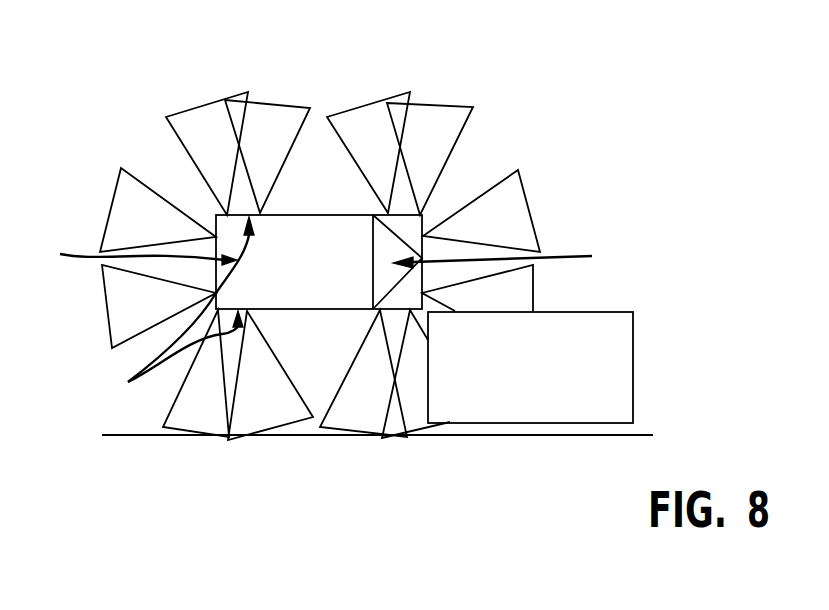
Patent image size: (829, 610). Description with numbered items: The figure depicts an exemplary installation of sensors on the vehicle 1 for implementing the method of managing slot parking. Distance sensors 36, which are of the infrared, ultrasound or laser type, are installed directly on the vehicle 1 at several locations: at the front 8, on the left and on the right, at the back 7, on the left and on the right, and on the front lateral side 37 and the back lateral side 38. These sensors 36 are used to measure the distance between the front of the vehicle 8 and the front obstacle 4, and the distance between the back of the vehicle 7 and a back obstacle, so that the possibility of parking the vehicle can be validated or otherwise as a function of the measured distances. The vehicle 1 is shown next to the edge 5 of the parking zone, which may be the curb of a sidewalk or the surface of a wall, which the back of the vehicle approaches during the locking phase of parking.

The vehicle 1 is at (232, 227).
The front obstacle 4 is at (625, 360).
The edge of the parking zone 5 is at (640, 435).
The back of the vehicle 7 is at (141, 253).
The front of the vehicle 8 is at (501, 256).
The distance sensors 36 is at (443, 125).
The front lateral side 37 is at (402, 212).
The back lateral side 38 is at (175, 309).